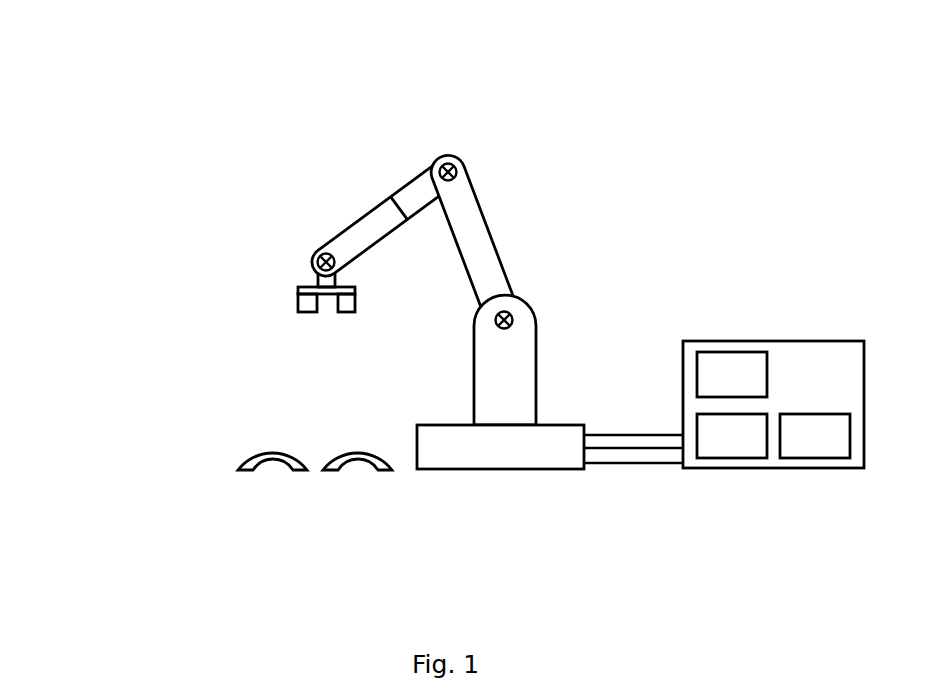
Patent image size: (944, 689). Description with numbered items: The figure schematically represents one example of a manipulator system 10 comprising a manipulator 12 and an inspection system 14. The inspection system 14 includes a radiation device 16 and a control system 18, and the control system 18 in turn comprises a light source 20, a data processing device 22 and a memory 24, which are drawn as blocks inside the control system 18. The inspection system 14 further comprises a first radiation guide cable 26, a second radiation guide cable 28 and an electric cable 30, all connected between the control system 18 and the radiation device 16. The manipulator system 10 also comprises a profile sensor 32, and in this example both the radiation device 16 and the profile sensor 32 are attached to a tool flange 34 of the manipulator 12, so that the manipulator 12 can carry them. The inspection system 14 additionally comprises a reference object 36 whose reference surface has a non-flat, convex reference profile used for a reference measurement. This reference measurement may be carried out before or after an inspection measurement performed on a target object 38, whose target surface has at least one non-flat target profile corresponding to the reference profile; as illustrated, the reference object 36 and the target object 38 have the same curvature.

The manipulator system 10 is at (280, 73).
The manipulator 12 is at (517, 250).
The inspection system 14 is at (272, 158).
The radiation device 16 is at (302, 303).
The control system 18 is at (783, 341).
The light source 20 is at (719, 388).
The data processing device 22 is at (719, 449).
The memory 24 is at (802, 449).
The first radiation guide cable 26 is at (610, 435).
The second radiation guide cable 28 is at (653, 448).
The electric cable 30 is at (632, 467).
The profile sensor 32 is at (353, 302).
The tool flange 34 is at (310, 290).
The reference object 36 is at (351, 456).
The target object 38 is at (266, 456).